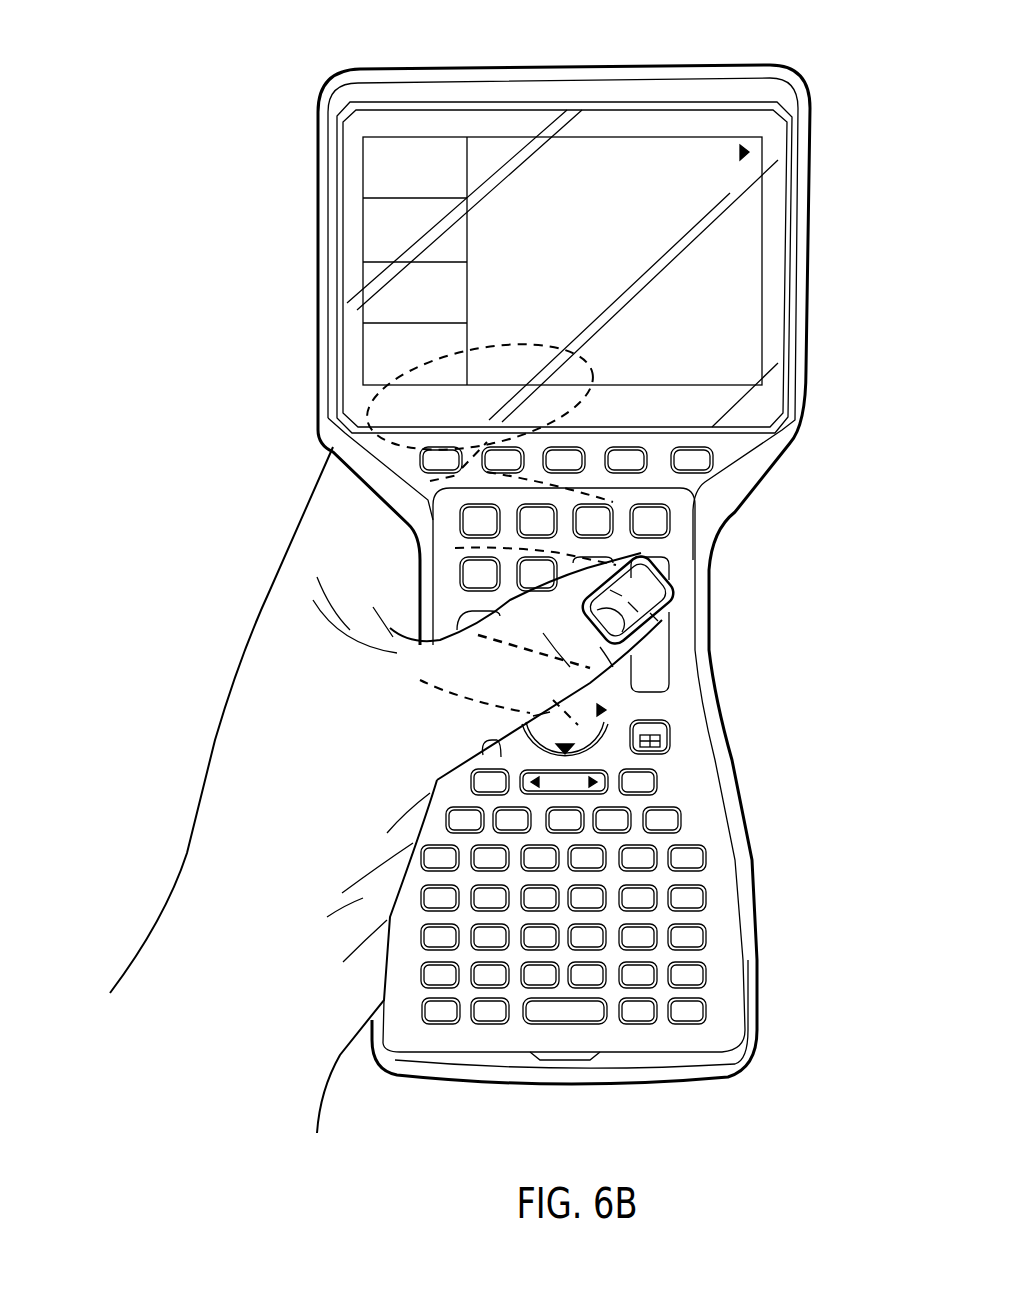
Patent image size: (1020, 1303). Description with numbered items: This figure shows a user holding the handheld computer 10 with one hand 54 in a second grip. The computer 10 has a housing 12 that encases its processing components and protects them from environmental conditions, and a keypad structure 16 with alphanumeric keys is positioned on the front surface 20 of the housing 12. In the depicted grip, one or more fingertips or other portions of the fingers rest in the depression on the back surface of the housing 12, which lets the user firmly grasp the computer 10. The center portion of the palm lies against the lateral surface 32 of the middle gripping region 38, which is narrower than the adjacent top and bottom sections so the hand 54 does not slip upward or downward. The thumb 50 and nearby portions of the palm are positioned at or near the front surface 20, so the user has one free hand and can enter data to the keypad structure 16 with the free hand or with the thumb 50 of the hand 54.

The handheld computer 10 is at (797, 47).
The housing 12 is at (437, 1082).
The keypad structure 16 is at (676, 705).
The front surface 20 is at (747, 447).
The lateral surface 32 is at (417, 560).
The middle gripping region 38 is at (672, 553).
The thumb 50 is at (662, 624).
The hand 54 is at (220, 812).